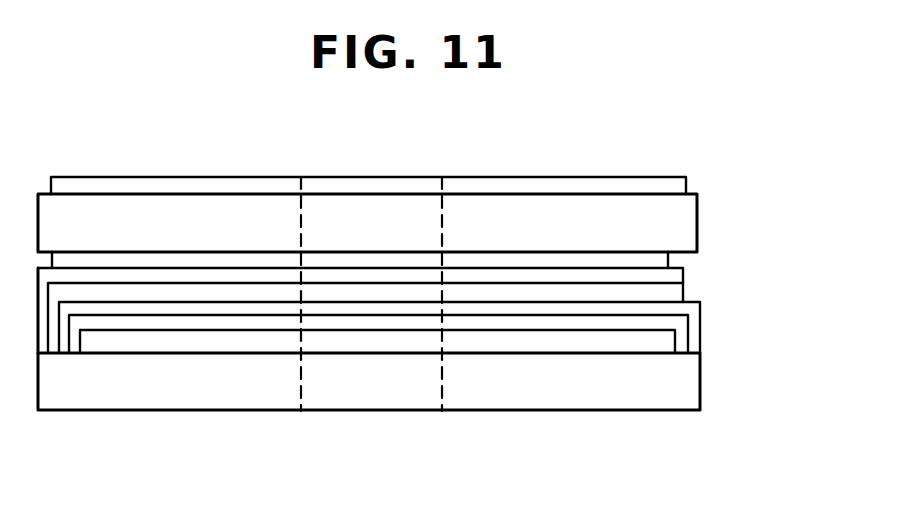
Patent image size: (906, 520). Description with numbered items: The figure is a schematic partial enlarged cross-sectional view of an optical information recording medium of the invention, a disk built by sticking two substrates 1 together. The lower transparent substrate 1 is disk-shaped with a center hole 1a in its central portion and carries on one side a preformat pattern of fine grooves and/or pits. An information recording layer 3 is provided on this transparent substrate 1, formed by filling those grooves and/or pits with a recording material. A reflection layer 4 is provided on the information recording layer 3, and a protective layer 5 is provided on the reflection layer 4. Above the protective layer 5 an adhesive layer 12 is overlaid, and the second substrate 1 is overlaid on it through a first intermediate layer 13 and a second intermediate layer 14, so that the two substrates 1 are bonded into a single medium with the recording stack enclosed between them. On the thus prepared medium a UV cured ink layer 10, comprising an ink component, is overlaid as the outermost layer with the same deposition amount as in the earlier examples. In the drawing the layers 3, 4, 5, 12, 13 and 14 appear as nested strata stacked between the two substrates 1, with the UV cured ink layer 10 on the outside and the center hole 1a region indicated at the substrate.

The transparent substrate 1 is at (685, 210).
The center hole 1a is at (442, 424).
The information recording layer 3 is at (639, 343).
The reflection layer 4 is at (665, 327).
The protective layer 5 is at (690, 312).
The UV cured ink layer 10 is at (623, 186).
The adhesive layer 12 is at (678, 293).
The first intermediate layer 13 is at (676, 283).
The second intermediate layer 14 is at (650, 263).